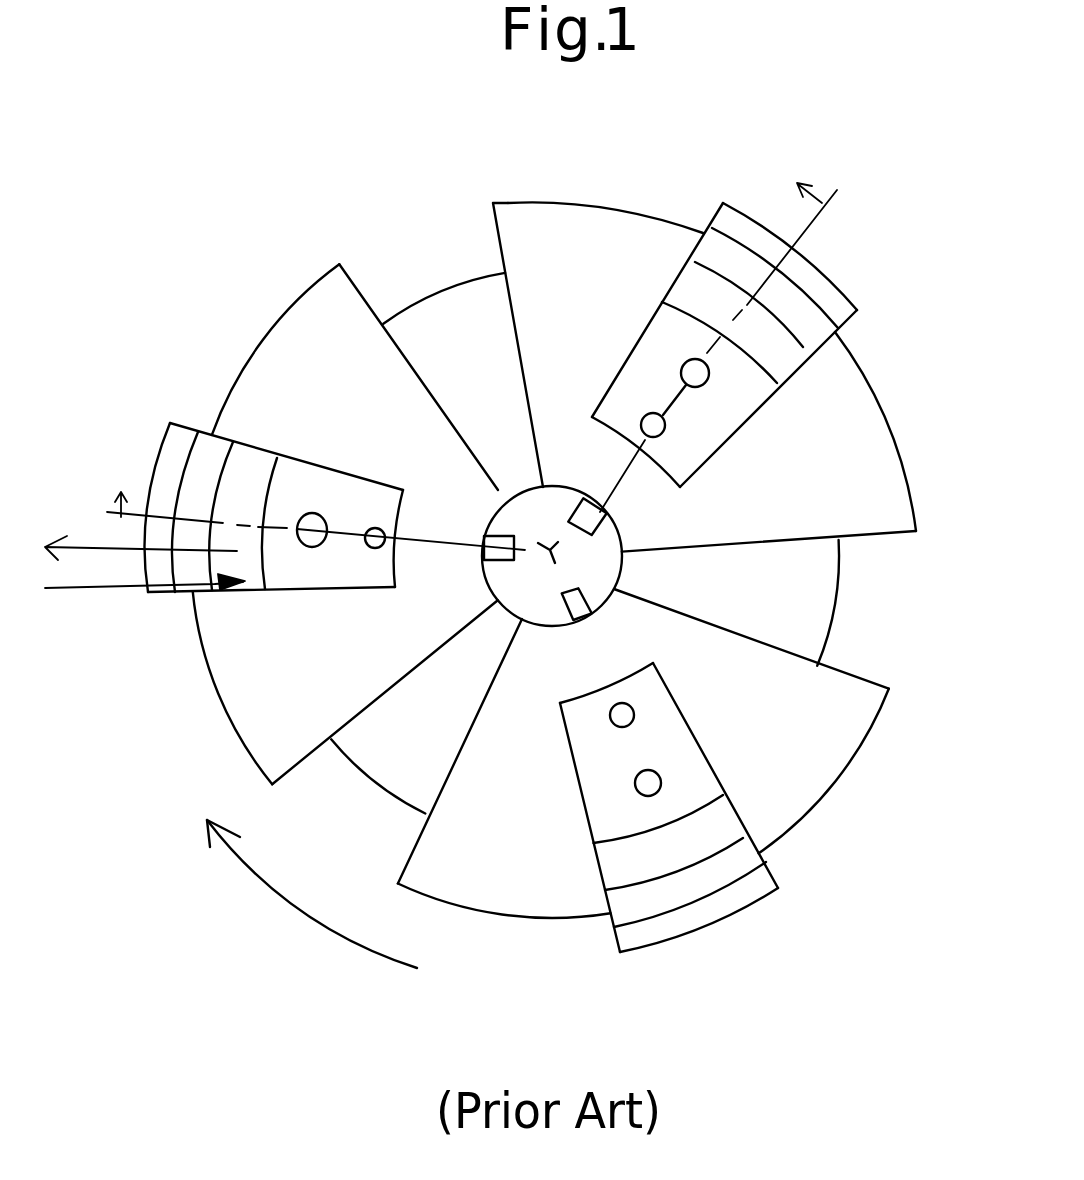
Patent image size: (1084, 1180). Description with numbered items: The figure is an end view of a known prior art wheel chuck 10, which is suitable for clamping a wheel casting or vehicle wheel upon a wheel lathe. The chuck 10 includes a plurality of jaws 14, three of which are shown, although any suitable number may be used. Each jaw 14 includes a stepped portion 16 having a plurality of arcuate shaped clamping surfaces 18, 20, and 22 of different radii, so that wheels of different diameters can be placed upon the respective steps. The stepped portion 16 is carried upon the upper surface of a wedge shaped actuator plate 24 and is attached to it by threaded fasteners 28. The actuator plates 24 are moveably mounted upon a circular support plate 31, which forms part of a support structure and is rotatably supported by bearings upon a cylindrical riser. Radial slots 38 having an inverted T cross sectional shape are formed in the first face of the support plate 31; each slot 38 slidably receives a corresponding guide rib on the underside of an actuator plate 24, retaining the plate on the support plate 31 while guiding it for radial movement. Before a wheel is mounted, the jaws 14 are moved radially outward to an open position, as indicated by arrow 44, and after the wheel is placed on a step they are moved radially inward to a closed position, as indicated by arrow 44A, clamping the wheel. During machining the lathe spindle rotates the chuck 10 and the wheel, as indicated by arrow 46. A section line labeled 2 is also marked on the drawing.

The wheel chuck 10 is at (357, 182).
The jaw 14 is at (173, 641).
The stepped portion 16 is at (163, 443).
The arcuate shaped clamping surface 18 is at (307, 593).
The arcuate shaped clamping surface 20 is at (243, 593).
The arcuate shaped clamping surface 22 is at (203, 593).
The actuator plate 24 is at (263, 340).
The threaded fasteners 28 is at (372, 530).
The support plate 31 is at (840, 600).
The radial slots 38 is at (502, 535).
The section line 2 is at (457, 351).
The arrow 44 is at (141, 562).
The arrow 44A is at (145, 605).
The arrow 46 is at (312, 894).